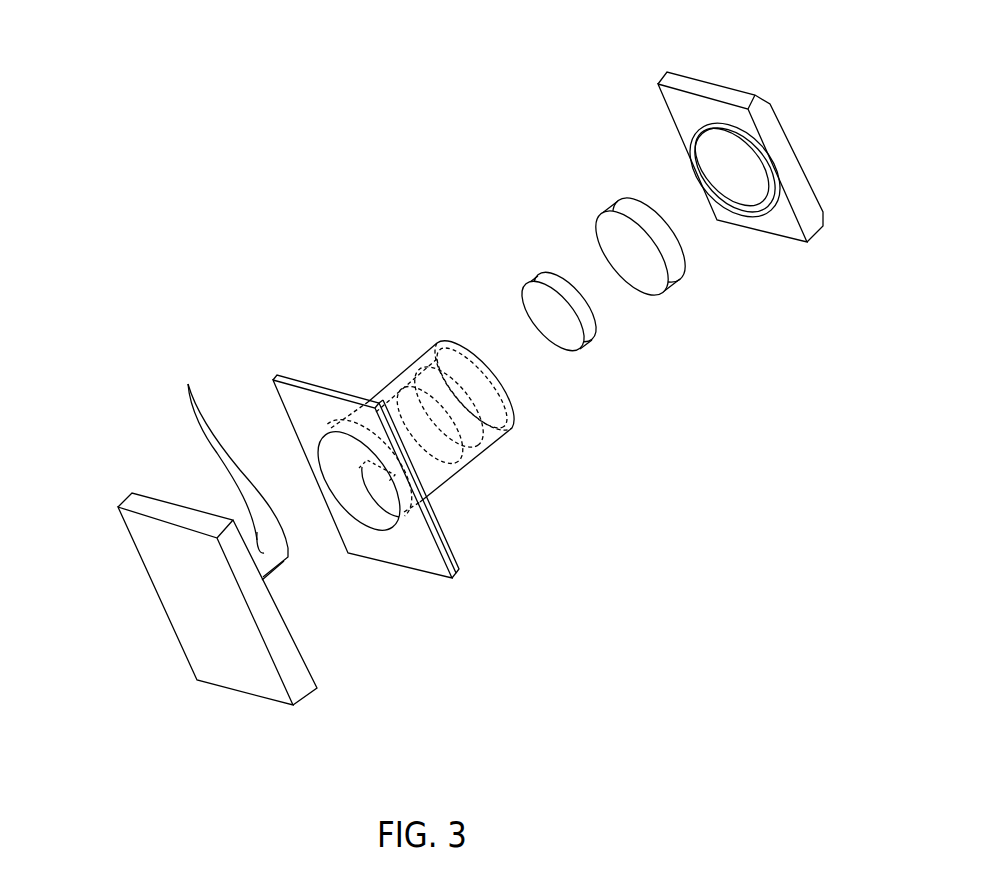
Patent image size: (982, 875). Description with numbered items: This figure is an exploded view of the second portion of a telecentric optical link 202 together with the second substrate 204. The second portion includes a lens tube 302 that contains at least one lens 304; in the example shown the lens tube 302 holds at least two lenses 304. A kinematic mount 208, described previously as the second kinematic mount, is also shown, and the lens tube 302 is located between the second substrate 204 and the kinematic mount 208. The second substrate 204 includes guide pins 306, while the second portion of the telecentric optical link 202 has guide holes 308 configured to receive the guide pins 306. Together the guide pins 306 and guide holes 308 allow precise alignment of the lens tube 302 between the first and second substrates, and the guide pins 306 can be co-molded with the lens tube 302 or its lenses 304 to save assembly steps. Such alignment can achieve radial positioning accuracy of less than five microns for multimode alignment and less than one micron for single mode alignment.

The second portion of a telecentric optical link 202 is at (222, 128).
The second substrate 204 is at (142, 505).
The kinematic mount 208 is at (690, 77).
The lens tube 302 is at (432, 342).
The lens 304 is at (607, 217).
The guide pins 306 is at (188, 386).
The guide holes 308 is at (418, 509).